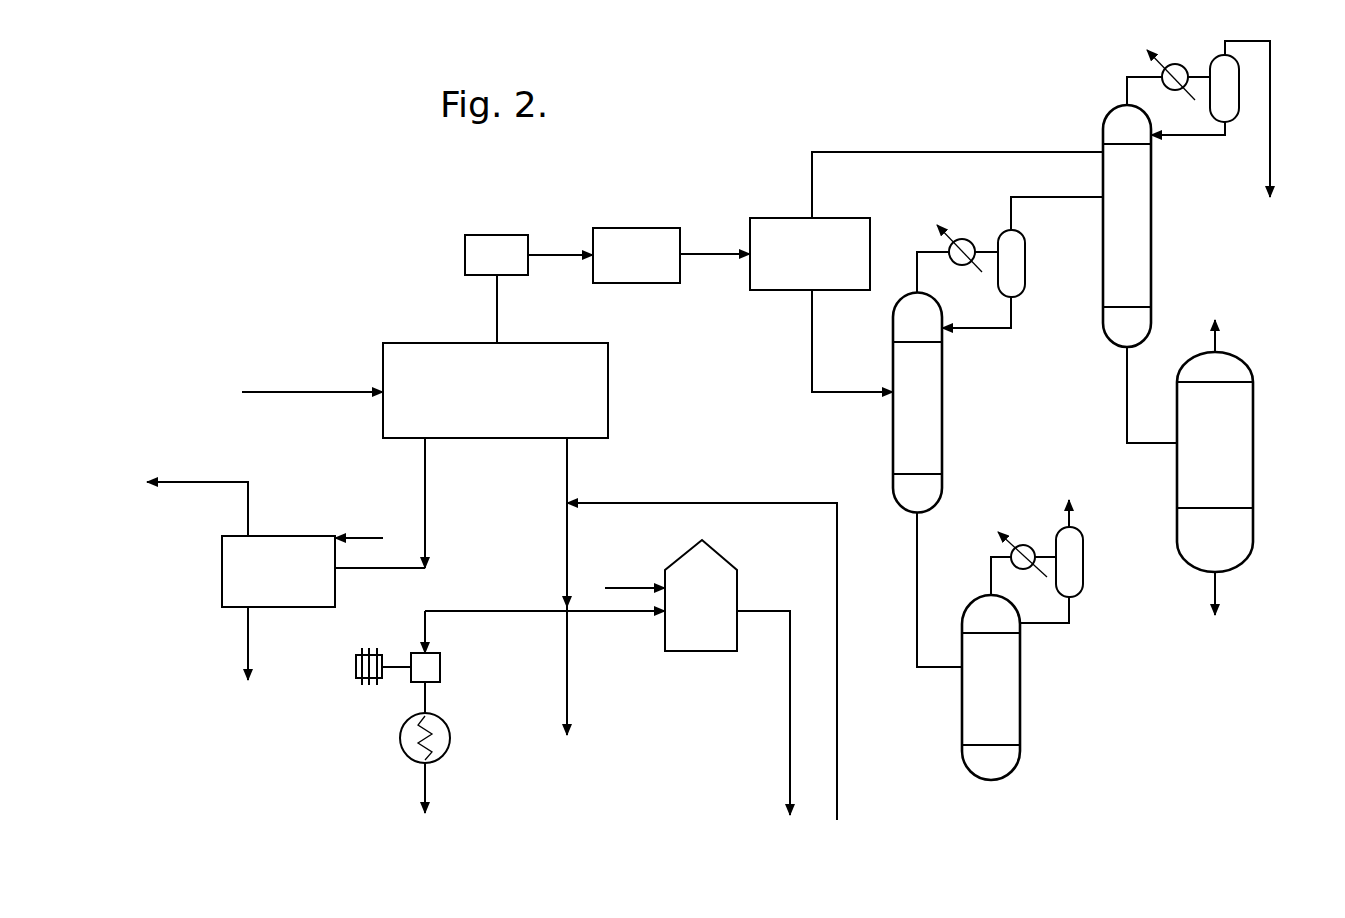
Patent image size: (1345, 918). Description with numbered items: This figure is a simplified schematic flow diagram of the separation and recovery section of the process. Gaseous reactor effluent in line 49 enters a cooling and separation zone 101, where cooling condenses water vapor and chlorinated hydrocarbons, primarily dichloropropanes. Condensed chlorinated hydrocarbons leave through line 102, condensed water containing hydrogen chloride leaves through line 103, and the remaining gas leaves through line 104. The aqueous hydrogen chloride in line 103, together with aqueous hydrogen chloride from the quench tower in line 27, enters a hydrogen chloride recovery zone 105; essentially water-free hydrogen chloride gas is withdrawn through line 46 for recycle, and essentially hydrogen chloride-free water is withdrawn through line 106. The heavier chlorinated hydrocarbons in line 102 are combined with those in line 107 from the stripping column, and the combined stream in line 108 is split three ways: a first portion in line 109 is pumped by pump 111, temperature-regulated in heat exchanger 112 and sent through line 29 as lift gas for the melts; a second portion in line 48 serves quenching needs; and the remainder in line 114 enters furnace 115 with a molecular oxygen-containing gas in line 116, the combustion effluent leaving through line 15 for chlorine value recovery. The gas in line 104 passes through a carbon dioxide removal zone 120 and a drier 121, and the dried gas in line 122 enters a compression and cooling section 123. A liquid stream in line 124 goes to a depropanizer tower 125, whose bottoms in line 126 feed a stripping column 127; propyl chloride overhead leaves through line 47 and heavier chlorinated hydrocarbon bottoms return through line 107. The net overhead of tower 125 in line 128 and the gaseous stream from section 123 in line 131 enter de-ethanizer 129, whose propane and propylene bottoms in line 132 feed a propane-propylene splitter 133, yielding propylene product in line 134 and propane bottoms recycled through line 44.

The combustion effluent line 15 is at (758, 613).
The aqueous hydrogen chloride line 27 is at (366, 536).
The lift gas line 29 is at (422, 785).
The propane bottoms line 44 is at (1218, 590).
The hydrogen chloride gas line 46 is at (220, 478).
The propyl chloride overhead line 47 is at (1072, 523).
The quench line 48 is at (565, 657).
The gaseous effluent line 49 is at (333, 390).
The cooling and separation zone 101 is at (462, 343).
The condensed chlorinated hydrocarbons line 102 is at (567, 482).
The condensed water line 103 is at (422, 490).
The remaining gaseous effluent line 104 is at (497, 326).
The hydrogen chloride recovery zone 105 is at (287, 532).
The water line 106 is at (250, 642).
The heavier chlorinated hydrocarbons bottoms line 107 is at (760, 503).
The combined chlorinated hydrocarbons line 108 is at (567, 555).
The first portion line 109 is at (495, 611).
The pump 111 is at (410, 655).
The heat exchanger 112 is at (400, 742).
The furnace feed line 114 is at (597, 614).
The furnace 115 is at (740, 590).
The molecular oxygen-containing gas line 116 is at (617, 583).
The carbon dioxide removal zone 120 is at (465, 255).
The drier 121 is at (652, 228).
The dried gas line 122 is at (718, 254).
The compression and cooling section 123 is at (781, 218).
The liquid stream line 124 is at (810, 362).
The depropanizer tower 125 is at (893, 447).
The depropanizer bottoms line 126 is at (915, 590).
The stripping column 127 is at (1022, 700).
The depropanizer net overhead line 128 is at (1066, 197).
The de-ethanizer 129 is at (1102, 242).
The gaseous stream line 131 is at (988, 152).
The de-ethanizer bottoms line 132 is at (1123, 400).
The propane-propylene splitter 133 is at (1255, 460).
The propylene overhead line 134 is at (1218, 345).